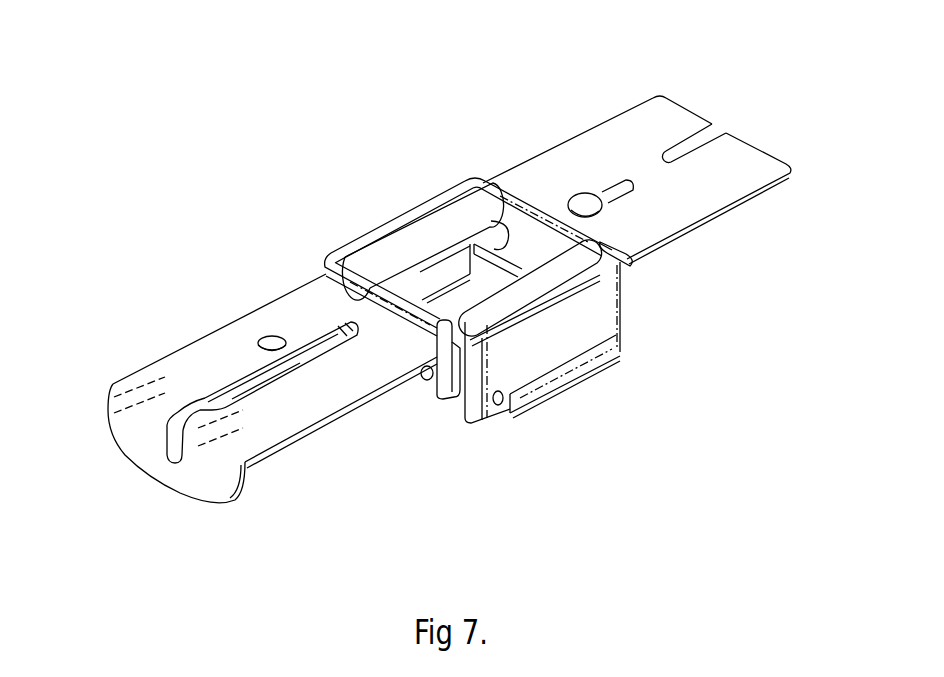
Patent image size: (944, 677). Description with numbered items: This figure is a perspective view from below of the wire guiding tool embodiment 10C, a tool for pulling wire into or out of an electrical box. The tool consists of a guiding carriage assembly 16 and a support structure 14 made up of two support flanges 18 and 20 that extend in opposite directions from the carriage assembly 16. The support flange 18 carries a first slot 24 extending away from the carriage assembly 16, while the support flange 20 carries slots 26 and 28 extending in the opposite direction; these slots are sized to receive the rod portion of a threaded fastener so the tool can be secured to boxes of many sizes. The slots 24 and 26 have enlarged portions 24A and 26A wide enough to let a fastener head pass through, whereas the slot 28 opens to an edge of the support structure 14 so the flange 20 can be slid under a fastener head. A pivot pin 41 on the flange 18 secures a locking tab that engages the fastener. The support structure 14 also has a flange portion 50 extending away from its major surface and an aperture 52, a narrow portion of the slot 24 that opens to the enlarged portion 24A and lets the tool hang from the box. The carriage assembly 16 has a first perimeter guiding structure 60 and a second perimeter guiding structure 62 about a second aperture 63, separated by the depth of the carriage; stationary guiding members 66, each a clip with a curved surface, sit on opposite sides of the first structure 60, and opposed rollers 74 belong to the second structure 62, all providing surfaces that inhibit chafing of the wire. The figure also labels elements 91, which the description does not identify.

The wire guiding tool 10C is at (715, 368).
The support structure 14 is at (786, 211).
The guiding carriage assembly 16 is at (397, 188).
The support flange 18 is at (315, 447).
The support flange 20 is at (657, 82).
The first slot 24 is at (247, 373).
The enlarged portion 24A is at (200, 397).
The slot 26 is at (602, 185).
The enlarged portion 26A is at (573, 200).
The slot 28 is at (700, 133).
The pivot pin 41 is at (270, 333).
The flange portion 50 is at (168, 480).
The aperture 52 is at (163, 453).
The first perimeter guiding structure 60 is at (468, 438).
The second perimeter guiding structure 62 is at (468, 155).
The second aperture 63 is at (470, 290).
The guiding members 66 is at (485, 300).
The rollers 74 is at (393, 242).
The pin 91 is at (575, 237).